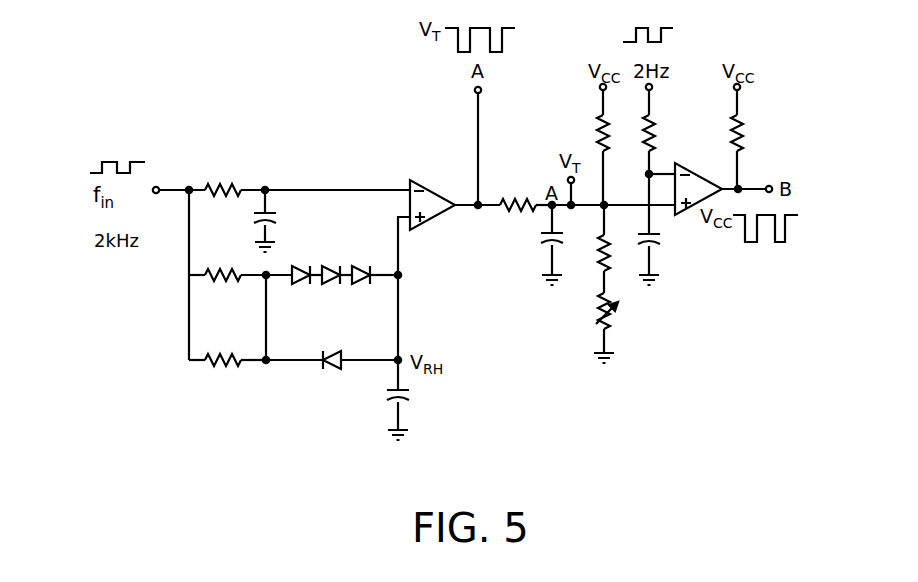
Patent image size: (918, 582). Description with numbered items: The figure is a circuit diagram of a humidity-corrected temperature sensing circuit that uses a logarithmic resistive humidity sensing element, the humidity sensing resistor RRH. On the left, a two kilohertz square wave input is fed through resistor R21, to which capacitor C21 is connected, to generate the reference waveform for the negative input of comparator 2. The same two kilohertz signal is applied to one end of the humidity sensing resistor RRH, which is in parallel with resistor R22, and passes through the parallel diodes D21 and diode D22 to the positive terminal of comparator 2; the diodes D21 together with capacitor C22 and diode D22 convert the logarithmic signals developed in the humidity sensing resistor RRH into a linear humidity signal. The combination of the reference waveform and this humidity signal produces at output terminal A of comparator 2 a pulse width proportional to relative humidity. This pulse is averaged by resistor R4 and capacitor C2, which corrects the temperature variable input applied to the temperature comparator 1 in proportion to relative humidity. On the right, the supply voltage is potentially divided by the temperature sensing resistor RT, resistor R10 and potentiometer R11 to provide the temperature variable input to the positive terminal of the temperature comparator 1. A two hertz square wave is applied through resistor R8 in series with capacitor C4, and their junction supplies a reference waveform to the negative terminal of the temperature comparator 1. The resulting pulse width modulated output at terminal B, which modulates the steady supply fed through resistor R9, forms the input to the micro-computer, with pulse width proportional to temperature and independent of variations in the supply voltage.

The temperature comparator 1 is at (689, 172).
The comparator 2 is at (425, 186).
The resistor R21 is at (227, 179).
The capacitor C21 is at (251, 221).
The humidity sensing resistor RRH is at (240, 263).
The diodes D21 is at (372, 264).
The resistor R22 is at (227, 349).
The diode D22 is at (332, 373).
The capacitor C22 is at (421, 414).
The resistor R4 is at (526, 194).
The capacitor C2 is at (540, 245).
The temperature sensing resistor RT is at (592, 147).
The resistor R10 is at (589, 249).
The potentiometer R11 is at (594, 328).
The resistor R8 is at (664, 132).
The capacitor C4 is at (664, 229).
The resistor R9 is at (752, 139).